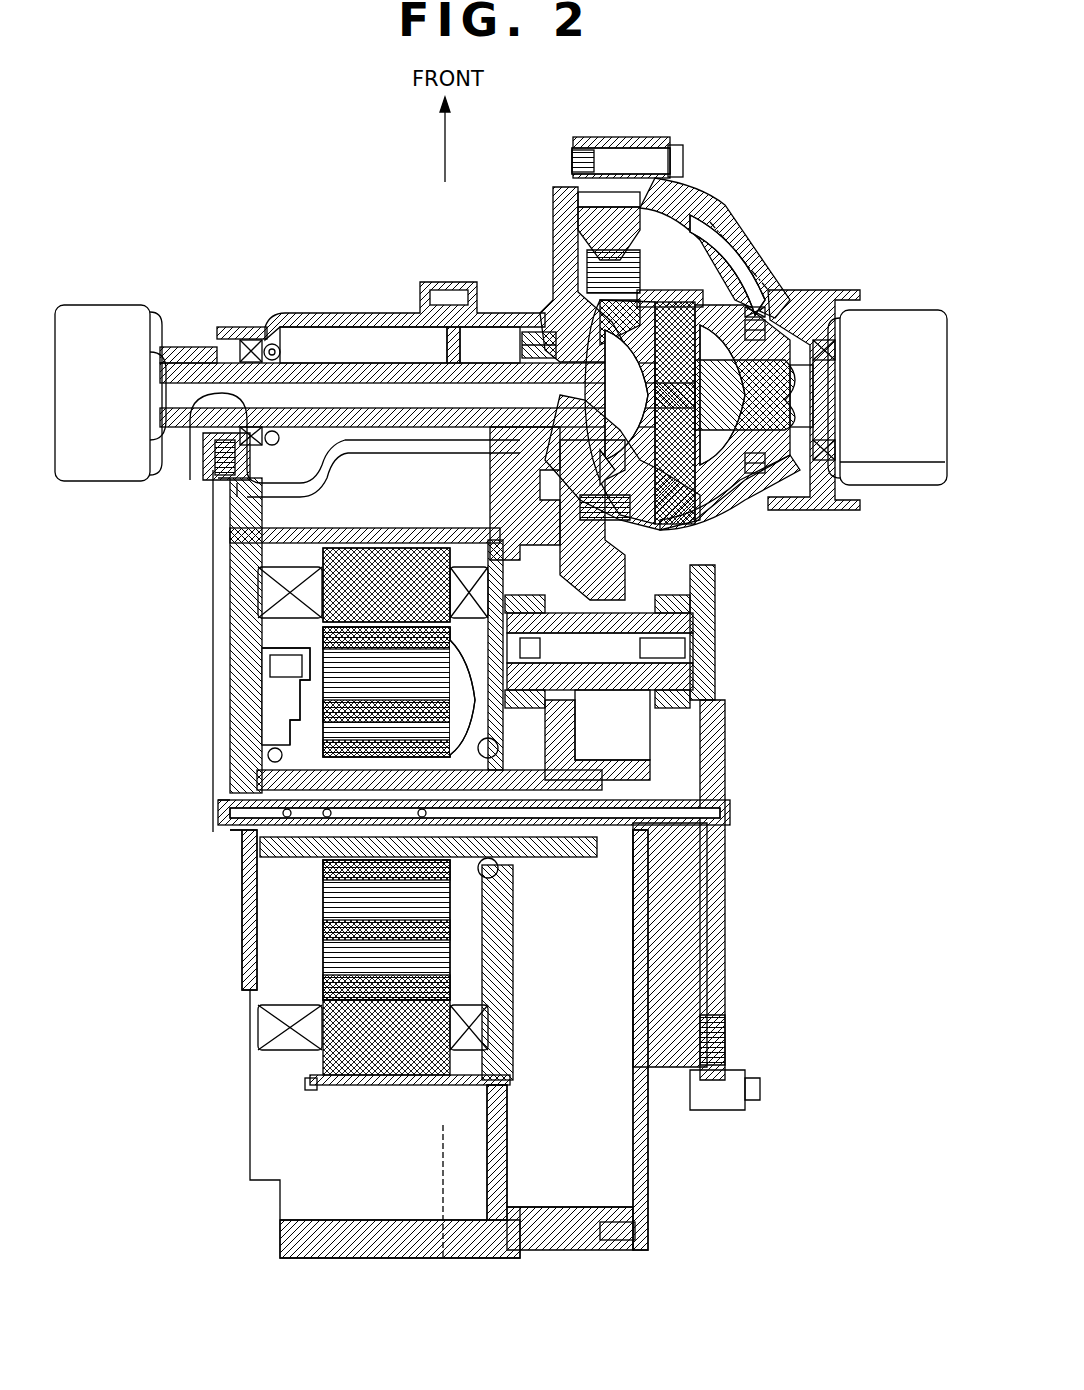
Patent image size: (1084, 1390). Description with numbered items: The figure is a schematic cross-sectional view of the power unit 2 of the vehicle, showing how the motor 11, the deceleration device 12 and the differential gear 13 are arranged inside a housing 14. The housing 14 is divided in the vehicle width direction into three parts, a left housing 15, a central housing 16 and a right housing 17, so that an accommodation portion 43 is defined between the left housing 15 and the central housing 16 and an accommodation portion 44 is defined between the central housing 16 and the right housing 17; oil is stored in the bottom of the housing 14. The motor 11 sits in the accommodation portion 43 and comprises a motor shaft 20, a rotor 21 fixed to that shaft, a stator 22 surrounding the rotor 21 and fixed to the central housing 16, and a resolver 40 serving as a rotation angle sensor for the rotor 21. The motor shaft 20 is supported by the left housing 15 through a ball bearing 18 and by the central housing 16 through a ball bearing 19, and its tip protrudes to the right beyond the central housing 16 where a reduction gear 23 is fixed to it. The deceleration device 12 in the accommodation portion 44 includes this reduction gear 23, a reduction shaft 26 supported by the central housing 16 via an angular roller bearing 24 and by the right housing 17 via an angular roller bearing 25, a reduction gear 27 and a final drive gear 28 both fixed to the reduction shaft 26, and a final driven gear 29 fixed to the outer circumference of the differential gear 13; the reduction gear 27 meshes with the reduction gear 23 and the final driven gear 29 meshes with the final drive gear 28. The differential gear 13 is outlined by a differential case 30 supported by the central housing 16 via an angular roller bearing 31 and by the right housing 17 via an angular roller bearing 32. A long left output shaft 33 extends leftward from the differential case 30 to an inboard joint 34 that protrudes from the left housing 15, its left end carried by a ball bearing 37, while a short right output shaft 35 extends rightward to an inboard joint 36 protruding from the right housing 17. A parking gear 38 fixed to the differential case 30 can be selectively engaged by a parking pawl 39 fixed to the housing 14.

The power unit 2 is at (224, 163).
The motor 11 is at (278, 632).
The deceleration device 12 is at (678, 562).
The differential gear 13 is at (738, 305).
The housing 14 is at (405, 280).
The left housing 15 is at (368, 312).
The central housing 16 is at (525, 297).
The right housing 17 is at (748, 238).
The ball bearing 18 is at (245, 870).
The ball bearing 19 is at (485, 880).
The motor shaft 20 is at (440, 735).
The rotor 21 is at (402, 705).
The stator 22 is at (402, 601).
The reduction gear 23 is at (545, 858).
The angular roller bearing 24 is at (530, 692).
The angular roller bearing 25 is at (700, 682).
The reduction shaft 26 is at (700, 632).
The reduction gear 27 is at (495, 512).
The final drive gear 28 is at (598, 700).
The final driven gear 29 is at (573, 183).
The differential case 30 is at (724, 494).
The angular roller bearing 31 is at (532, 346).
The angular roller bearing 32 is at (795, 318).
The left output shaft 33 is at (395, 370).
The inboard joint 34 is at (108, 318).
The right output shaft 35 is at (805, 405).
The inboard joint 36 is at (890, 320).
The ball bearing 37 is at (265, 327).
The parking gear 38 is at (712, 298).
The parking pawl 39 is at (762, 300).
The resolver 40 is at (318, 664).
The accommodation portion 43 is at (388, 506).
The accommodation portion 44 is at (572, 521).